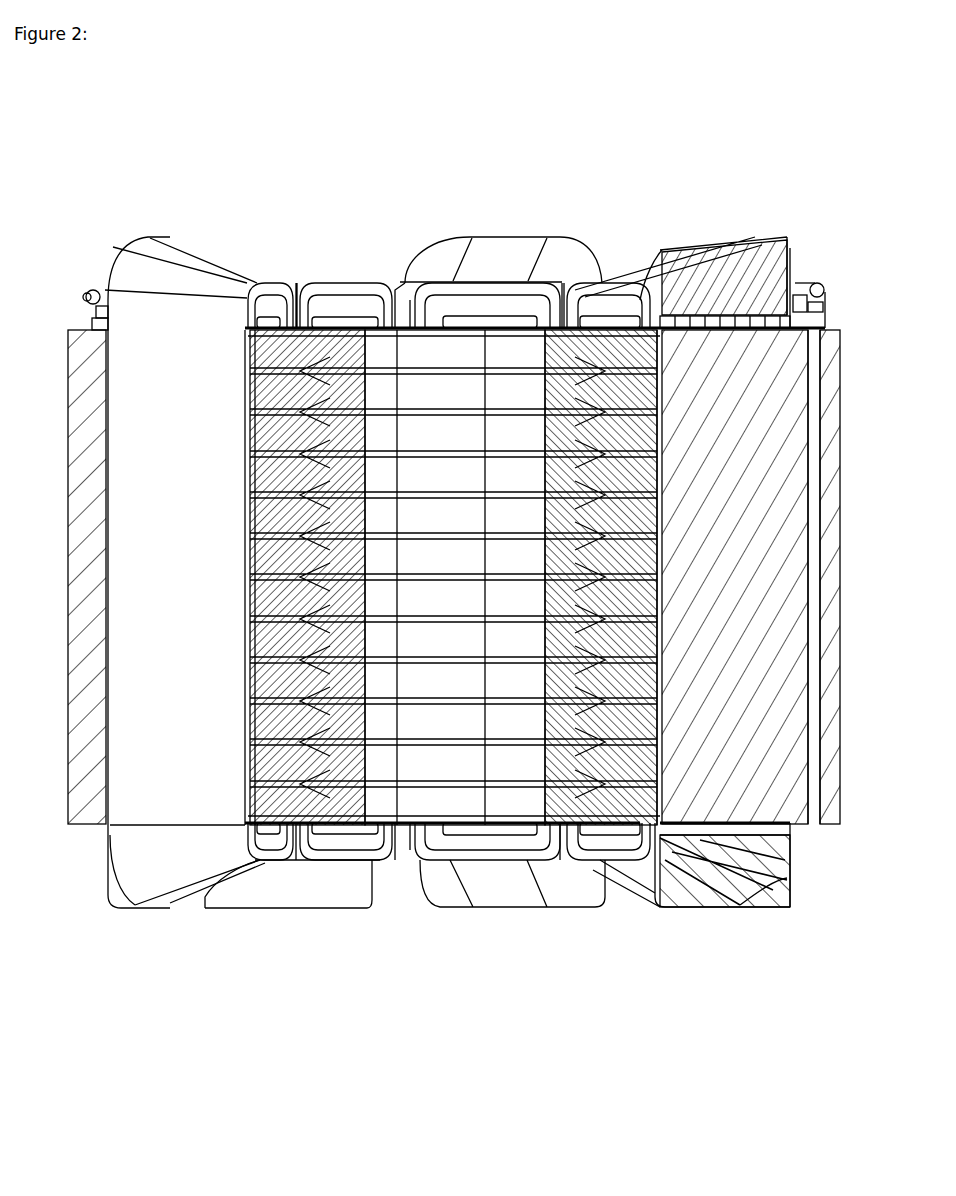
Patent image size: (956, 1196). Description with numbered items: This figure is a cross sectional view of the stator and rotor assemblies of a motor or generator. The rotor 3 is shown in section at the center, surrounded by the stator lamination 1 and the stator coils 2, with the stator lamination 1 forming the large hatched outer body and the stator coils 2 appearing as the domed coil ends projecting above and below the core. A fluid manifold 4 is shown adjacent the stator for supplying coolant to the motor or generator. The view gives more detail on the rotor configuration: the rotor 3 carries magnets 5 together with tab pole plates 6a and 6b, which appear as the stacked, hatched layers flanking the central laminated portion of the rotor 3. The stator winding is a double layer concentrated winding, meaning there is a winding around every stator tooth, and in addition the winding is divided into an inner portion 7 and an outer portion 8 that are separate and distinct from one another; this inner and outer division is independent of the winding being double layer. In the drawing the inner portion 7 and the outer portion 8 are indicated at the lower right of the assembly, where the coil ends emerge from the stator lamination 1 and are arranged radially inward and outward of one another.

The stator lamination 1 is at (830, 365).
The stator coils 2 is at (502, 262).
The rotor 3 is at (437, 352).
The fluid manifold 4 is at (806, 268).
The magnets 5 is at (578, 348).
The tab pole plate 6a is at (627, 366).
The tab pole plate 6b is at (648, 343).
The inner portion of stator winding 7 is at (767, 855).
The outer portion of stator winding 8 is at (708, 868).